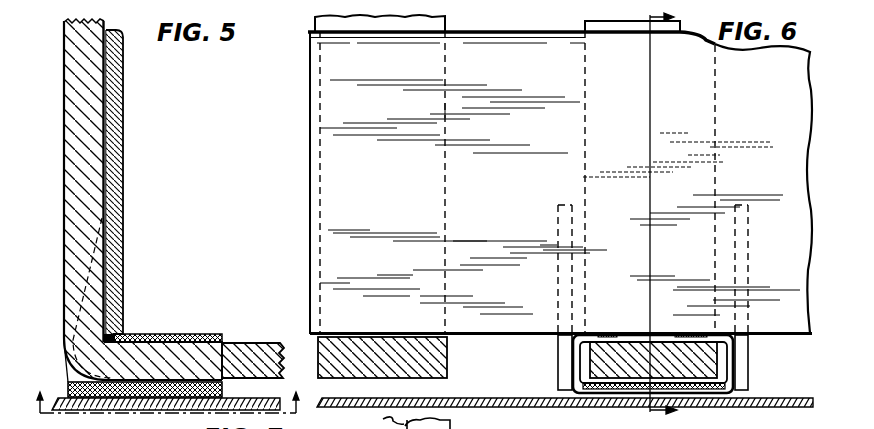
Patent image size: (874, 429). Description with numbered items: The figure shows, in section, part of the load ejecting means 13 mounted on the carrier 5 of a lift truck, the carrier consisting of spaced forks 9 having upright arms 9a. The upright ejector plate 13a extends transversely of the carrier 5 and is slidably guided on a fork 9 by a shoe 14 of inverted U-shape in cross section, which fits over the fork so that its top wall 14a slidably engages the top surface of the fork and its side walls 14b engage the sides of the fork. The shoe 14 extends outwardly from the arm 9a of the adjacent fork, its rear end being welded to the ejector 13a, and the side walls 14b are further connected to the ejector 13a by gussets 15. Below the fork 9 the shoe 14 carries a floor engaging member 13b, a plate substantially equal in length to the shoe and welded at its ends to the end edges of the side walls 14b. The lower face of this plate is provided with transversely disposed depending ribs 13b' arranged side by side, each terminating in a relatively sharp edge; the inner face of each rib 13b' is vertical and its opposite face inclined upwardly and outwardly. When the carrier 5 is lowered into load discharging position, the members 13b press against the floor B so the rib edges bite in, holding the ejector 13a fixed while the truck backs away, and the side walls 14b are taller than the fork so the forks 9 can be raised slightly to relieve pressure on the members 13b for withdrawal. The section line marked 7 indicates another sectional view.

In FIG. 6, the carrier 5 is at (671, 217).
In FIG. 5, the section line 7- 7 is at (168, 410).
In FIG. 5, the fork 9 is at (262, 347).
In FIG. 6, the fork 9 is at (447, 360).
In FIG. 5, the upright arm 9a is at (92, 128).
In FIG. 6, the upright arm 9a is at (418, 27).
In FIG. 6, the ejecting means 13 is at (288, 195).
In FIG. 5, the ejector 13a is at (113, 170).
In FIG. 6, the ejector 13a is at (312, 234).
In FIG. 5, the floor engaging member 13b is at (171, 391).
In FIG. 6, the floor engaging member 13b is at (654, 406).
In FIG. 5, the rib 13b' is at (166, 413).
In FIG. 6, the rib 13b' is at (565, 408).
In FIG. 5, the shoe 14 is at (153, 317).
In FIG. 6, the shoe 14 is at (674, 312).
In FIG. 5, the top wall 14a is at (213, 333).
In FIG. 6, the top wall 14a is at (640, 320).
In FIG. 6, the side wall 14b is at (558, 393).
In FIG. 6, the gusset 15 is at (566, 352).
In FIG. 6, the floor B is at (800, 385).